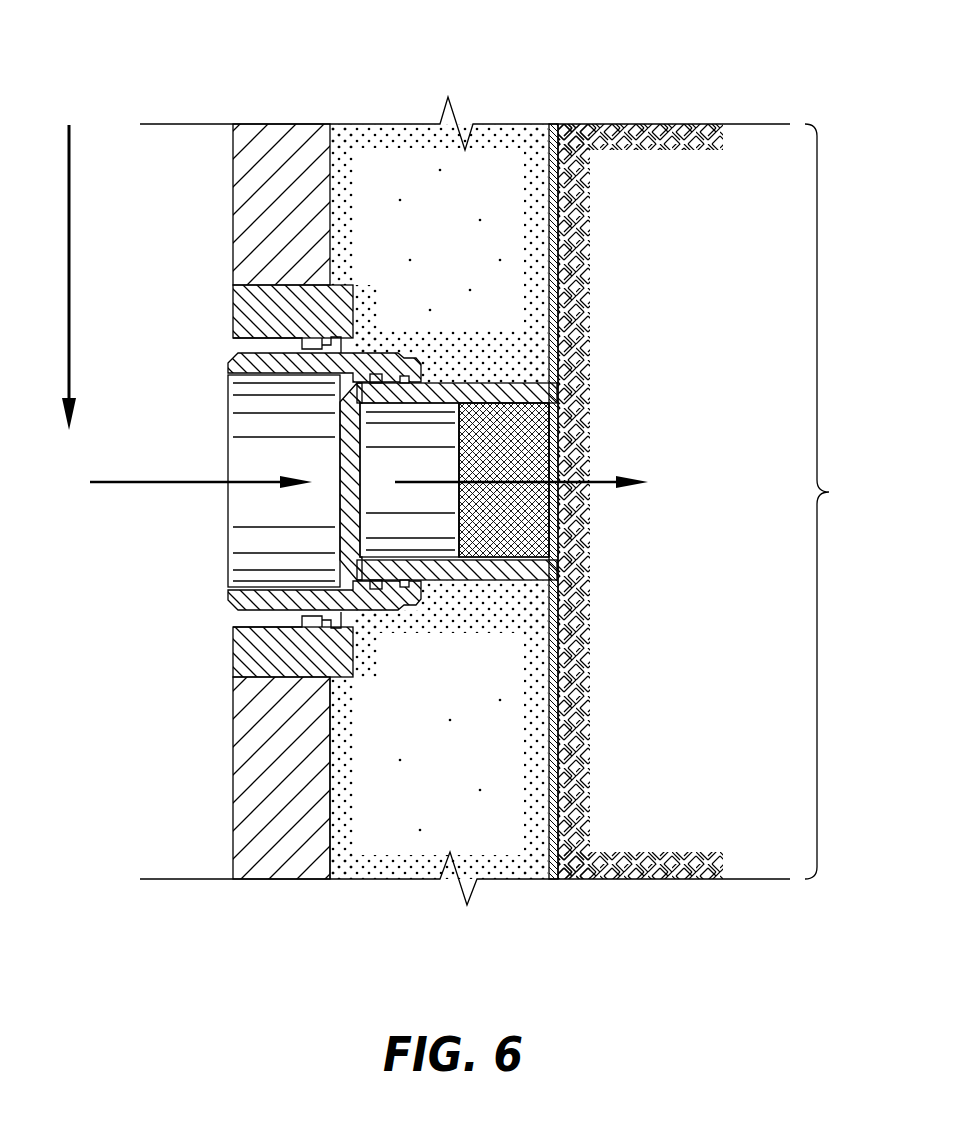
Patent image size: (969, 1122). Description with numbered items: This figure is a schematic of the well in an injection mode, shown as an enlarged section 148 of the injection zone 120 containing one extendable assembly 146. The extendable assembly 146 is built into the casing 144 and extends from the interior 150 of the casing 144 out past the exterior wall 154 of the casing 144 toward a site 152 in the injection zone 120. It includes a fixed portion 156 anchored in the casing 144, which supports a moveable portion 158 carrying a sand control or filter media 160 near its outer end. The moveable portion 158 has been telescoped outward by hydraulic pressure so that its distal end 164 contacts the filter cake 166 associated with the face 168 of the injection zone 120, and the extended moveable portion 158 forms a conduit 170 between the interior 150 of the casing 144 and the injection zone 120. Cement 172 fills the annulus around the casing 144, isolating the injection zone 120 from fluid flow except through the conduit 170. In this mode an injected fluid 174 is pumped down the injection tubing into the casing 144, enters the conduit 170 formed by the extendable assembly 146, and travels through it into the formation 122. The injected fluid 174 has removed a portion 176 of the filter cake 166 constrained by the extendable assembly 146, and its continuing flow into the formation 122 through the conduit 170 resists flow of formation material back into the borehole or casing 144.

The injection zone 120 is at (829, 492).
The formation 122 is at (678, 942).
The casing 144 is at (279, 136).
The extendable assembly 146 is at (142, 384).
The enlarged section 148 is at (642, 84).
The interior of the casing 150 is at (206, 742).
The site in the injection zone 152 is at (607, 523).
The exterior wall of the casing 154 is at (332, 782).
The fixed portion 156 is at (241, 307).
The moveable portion 158 is at (460, 648).
The filter media 160 is at (477, 412).
The distal end 164 is at (560, 397).
The filter cake 166 is at (553, 803).
The face of injection zone 168 is at (560, 744).
The conduit 170 is at (245, 538).
The cement 172 is at (461, 256).
The injected fluid 174 is at (74, 263).
The removed portion of filter cake 176 is at (553, 437).